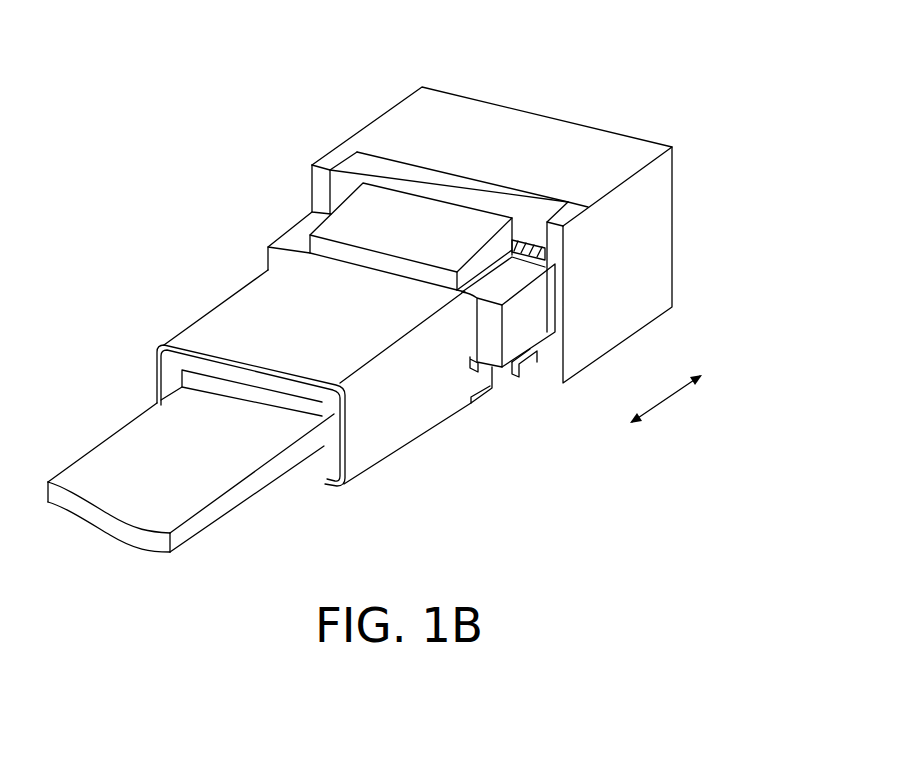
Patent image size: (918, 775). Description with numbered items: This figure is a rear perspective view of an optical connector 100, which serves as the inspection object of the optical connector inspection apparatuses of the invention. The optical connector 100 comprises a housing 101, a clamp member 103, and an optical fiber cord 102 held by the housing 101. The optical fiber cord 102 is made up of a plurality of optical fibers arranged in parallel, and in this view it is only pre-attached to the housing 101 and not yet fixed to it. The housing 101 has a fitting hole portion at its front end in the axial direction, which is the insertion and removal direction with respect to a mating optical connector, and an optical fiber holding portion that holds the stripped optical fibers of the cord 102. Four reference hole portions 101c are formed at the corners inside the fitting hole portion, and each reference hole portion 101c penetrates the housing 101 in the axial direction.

The optical connector 100 is at (225, 212).
The housing 101 is at (483, 127).
The reference hole portion 101c is at (334, 207).
The optical fiber cord 102 is at (113, 468).
The clamp member 103 is at (392, 232).